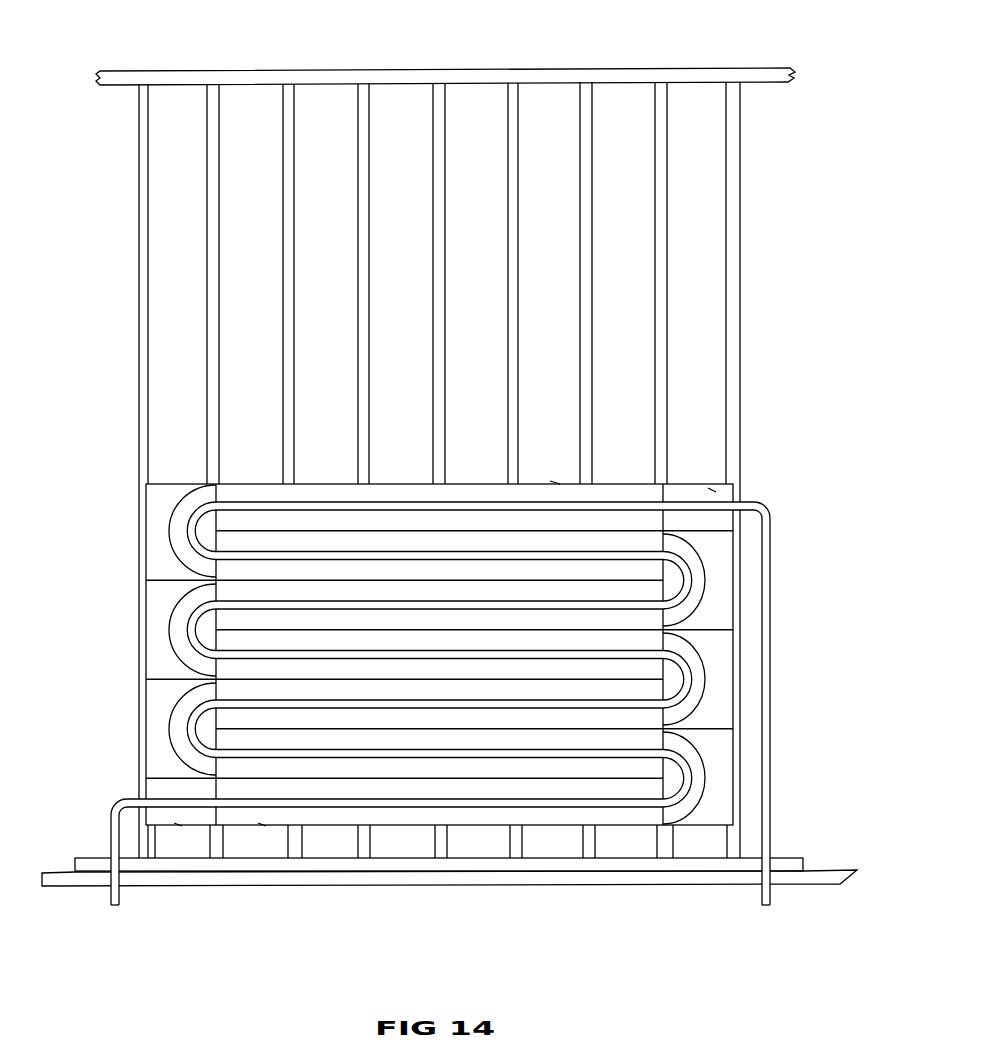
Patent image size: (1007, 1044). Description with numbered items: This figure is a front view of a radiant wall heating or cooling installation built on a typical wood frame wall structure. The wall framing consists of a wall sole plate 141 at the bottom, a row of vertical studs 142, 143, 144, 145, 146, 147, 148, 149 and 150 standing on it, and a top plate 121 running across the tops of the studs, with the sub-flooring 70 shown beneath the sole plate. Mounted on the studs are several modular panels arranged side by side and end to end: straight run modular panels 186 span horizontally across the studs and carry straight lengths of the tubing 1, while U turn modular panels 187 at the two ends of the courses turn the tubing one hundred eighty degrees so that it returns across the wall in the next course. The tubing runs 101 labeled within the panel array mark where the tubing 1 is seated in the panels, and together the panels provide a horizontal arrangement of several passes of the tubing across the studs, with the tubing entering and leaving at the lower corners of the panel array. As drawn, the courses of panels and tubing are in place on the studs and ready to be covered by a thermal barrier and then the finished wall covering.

The tubing 1 is at (770, 700).
The sub-flooring 70 is at (843, 872).
The tube 101 is at (182, 521).
The top plate 121 is at (340, 68).
The wall sole plate 141 is at (792, 857).
The stud 142 is at (148, 358).
The stud 143 is at (223, 363).
The stud 144 is at (297, 362).
The stud 145 is at (372, 372).
The stud 146 is at (445, 372).
The stud 147 is at (520, 368).
The stud 148 is at (594, 363).
The stud 149 is at (668, 370).
The stud 150 is at (738, 339).
The straight run modular panel 186 is at (555, 482).
The U turn modular panel 187 is at (157, 547).